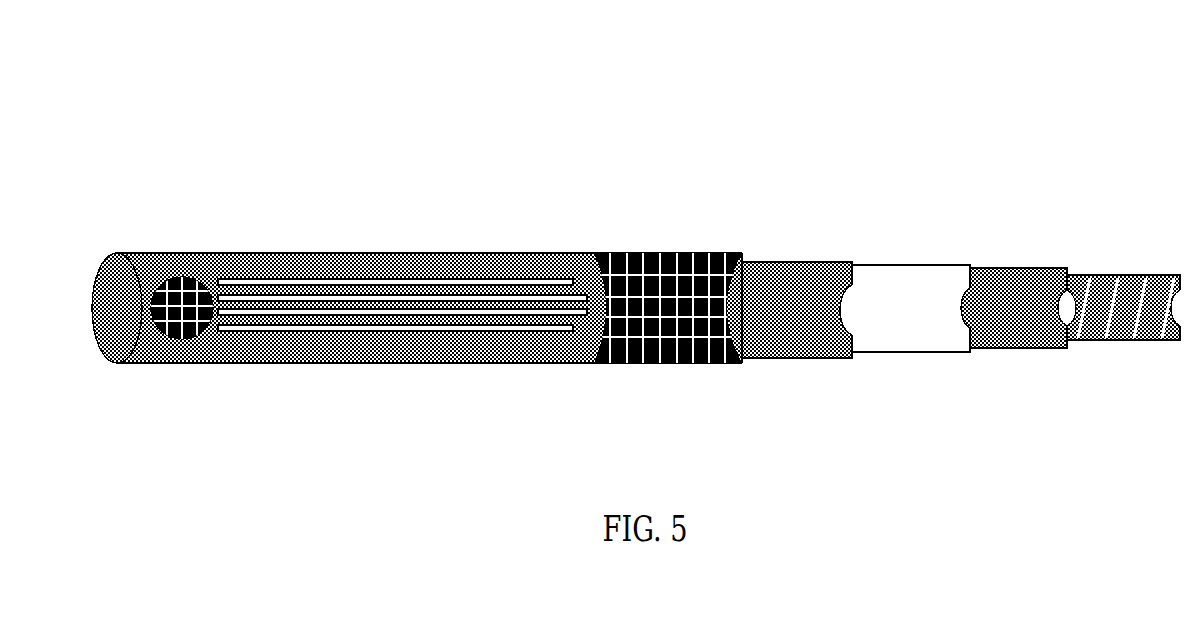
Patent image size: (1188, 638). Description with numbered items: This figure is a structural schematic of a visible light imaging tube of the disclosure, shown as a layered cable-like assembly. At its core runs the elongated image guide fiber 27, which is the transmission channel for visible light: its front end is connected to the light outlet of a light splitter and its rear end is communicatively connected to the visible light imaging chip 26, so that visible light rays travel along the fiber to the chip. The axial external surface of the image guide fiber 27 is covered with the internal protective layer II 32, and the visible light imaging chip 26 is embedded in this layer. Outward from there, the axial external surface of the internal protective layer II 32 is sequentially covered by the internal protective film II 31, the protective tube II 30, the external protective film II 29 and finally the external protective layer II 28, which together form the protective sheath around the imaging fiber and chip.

The visible light imaging chip 26 is at (178, 300).
The image guide fiber 27 is at (371, 290).
The external protective layer II 28 is at (668, 275).
The external protective film II 29 is at (784, 302).
The protective tube II 30 is at (887, 307).
The internal protective film II 31 is at (1006, 290).
The internal protective layer II 32 is at (1117, 283).